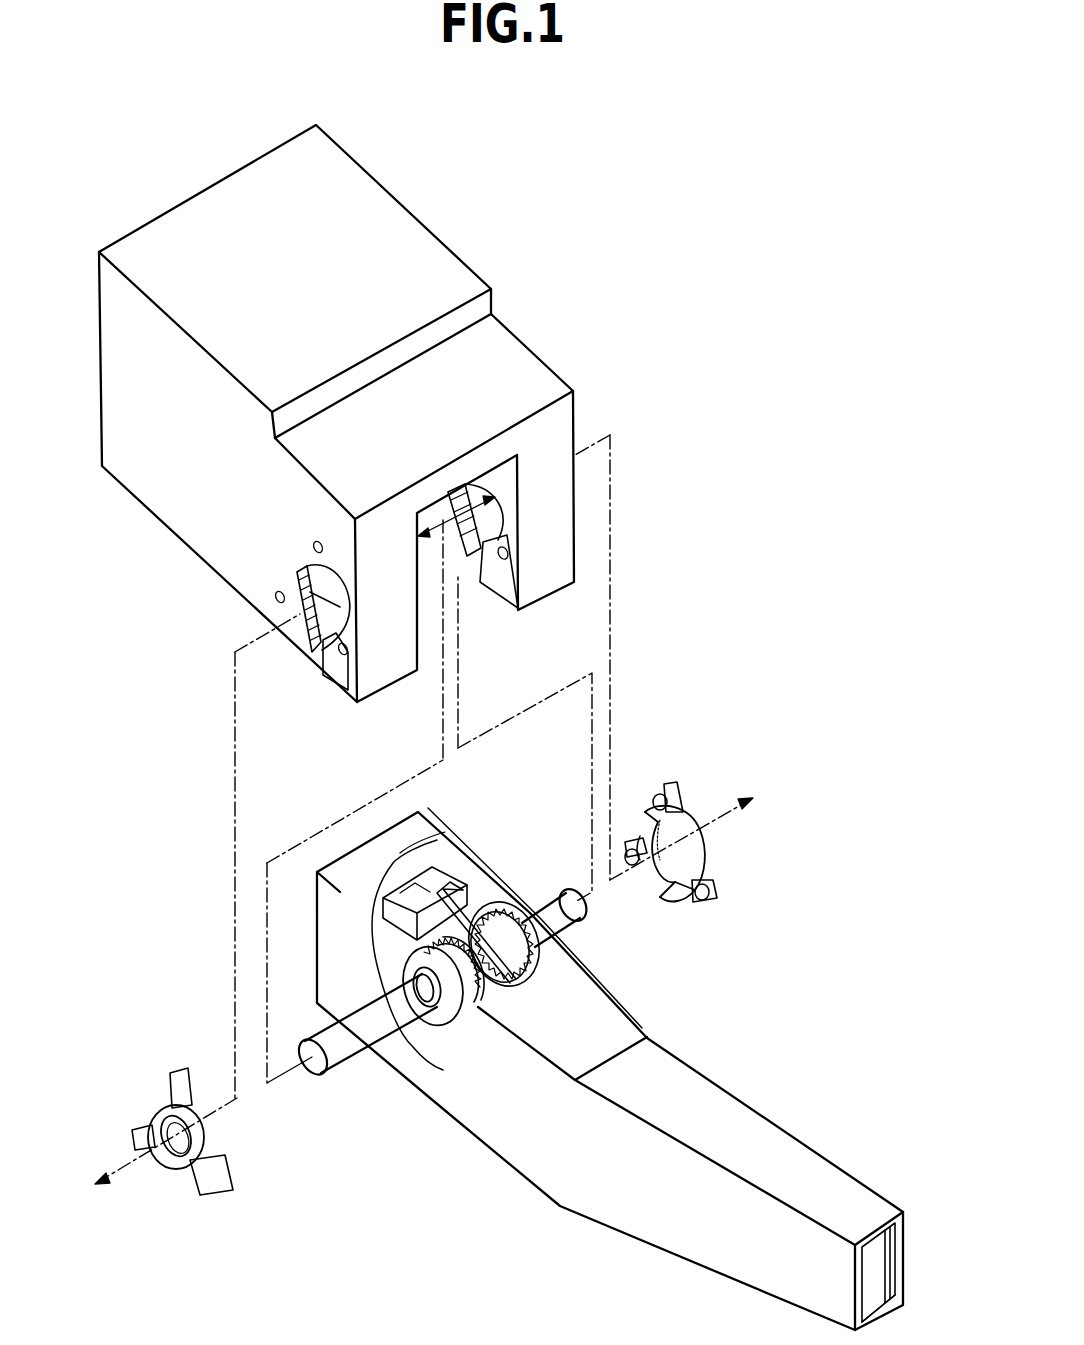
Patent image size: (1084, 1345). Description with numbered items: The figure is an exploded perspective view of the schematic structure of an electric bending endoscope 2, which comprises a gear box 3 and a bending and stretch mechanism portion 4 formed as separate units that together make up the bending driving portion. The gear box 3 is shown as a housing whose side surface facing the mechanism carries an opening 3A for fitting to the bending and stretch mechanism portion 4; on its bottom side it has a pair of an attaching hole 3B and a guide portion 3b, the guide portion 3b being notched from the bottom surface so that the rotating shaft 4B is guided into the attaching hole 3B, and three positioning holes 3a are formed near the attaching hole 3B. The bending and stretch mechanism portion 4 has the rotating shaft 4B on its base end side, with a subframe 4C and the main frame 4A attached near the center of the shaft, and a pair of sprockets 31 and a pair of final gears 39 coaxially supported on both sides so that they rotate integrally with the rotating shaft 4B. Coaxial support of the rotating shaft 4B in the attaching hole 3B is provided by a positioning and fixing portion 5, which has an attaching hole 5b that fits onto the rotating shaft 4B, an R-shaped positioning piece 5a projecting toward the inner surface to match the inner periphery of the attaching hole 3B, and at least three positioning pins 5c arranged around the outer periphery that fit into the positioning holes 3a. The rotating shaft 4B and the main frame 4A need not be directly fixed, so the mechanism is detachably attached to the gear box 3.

The electric bending endoscope 2 is at (590, 246).
The gear box 3 is at (423, 251).
The opening 3A is at (417, 640).
The attaching hole 3B is at (312, 590).
The positioning holes 3a is at (314, 548).
The guide portion 3b is at (311, 651).
The bending and stretch mechanism portion 4 is at (687, 1060).
The main frame 4A is at (888, 1268).
The rotating shaft 4B is at (555, 900).
The subframe 4C is at (470, 868).
The sprockets 31 is at (505, 905).
The final gears 39 is at (573, 962).
The positioning and fixing portion 5 is at (683, 903).
The positioning piece 5a is at (688, 920).
The attaching hole 5b is at (658, 792).
The positioning pins 5c is at (683, 792).